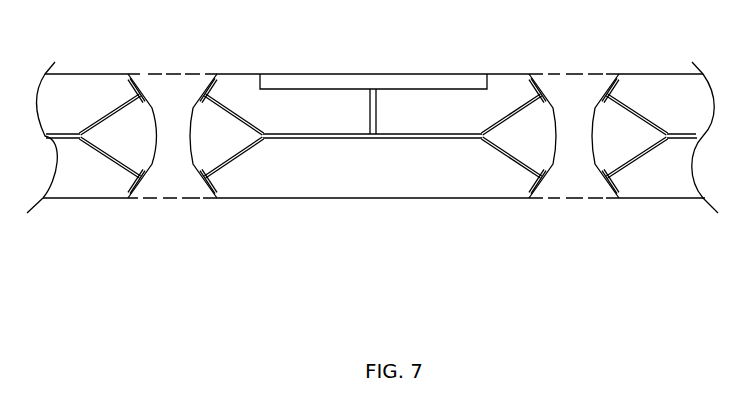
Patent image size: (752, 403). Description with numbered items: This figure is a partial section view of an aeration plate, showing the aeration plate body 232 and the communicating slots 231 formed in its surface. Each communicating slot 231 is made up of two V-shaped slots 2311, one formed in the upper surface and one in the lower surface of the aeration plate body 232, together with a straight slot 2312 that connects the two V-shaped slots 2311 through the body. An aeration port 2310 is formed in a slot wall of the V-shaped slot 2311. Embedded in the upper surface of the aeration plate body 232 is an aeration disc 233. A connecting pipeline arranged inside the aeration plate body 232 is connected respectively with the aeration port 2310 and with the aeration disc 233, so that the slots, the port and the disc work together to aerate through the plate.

The communicating slot 231 is at (109, 141).
The V-shaped slot 2311 is at (163, 93).
The aeration port 2310 is at (203, 95).
The straight slot 2312 is at (167, 140).
The aeration plate body 232 is at (348, 143).
The aeration disc 233 is at (345, 72).